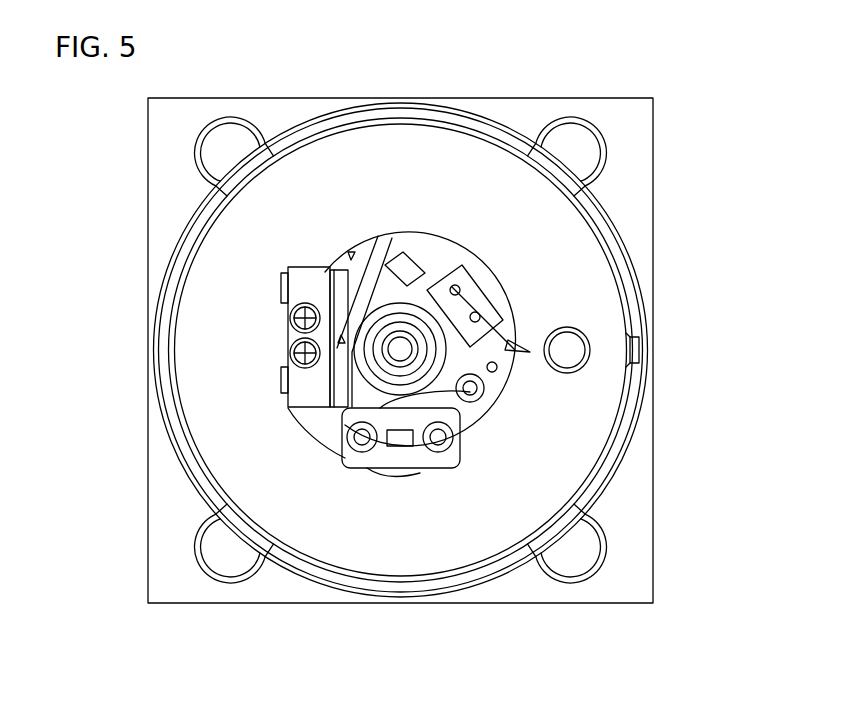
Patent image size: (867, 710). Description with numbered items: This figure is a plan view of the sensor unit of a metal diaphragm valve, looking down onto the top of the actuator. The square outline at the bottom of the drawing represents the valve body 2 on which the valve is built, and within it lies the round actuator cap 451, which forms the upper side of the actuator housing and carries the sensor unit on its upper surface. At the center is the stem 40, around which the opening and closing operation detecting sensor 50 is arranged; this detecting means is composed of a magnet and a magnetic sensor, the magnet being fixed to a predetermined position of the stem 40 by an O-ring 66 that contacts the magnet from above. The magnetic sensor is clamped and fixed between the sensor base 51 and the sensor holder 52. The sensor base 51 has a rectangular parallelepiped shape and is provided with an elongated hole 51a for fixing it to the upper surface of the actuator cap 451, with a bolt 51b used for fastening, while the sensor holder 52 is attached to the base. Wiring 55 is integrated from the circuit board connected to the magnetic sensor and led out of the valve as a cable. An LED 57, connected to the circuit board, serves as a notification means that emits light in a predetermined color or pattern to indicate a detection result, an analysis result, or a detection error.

The valve body 2 is at (653, 557).
The actuator cap 451 is at (618, 236).
The opening and closing operation detecting sensor 50 is at (452, 300).
The stem 40 is at (387, 294).
The sensor base 51 is at (242, 355).
The elongated hole 51a is at (303, 298).
The bolt 51b is at (290, 313).
The sensor holder 52 is at (340, 413).
The wiring 55 is at (514, 330).
The O-ring 66 is at (520, 357).
The LED 57 is at (400, 448).